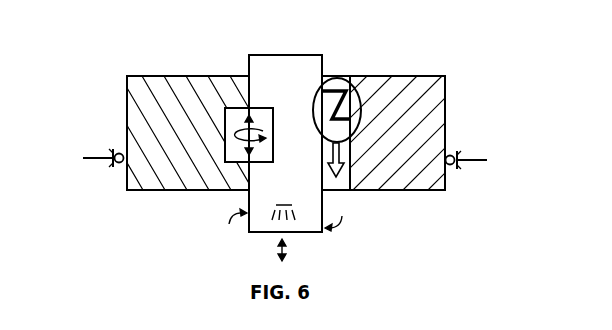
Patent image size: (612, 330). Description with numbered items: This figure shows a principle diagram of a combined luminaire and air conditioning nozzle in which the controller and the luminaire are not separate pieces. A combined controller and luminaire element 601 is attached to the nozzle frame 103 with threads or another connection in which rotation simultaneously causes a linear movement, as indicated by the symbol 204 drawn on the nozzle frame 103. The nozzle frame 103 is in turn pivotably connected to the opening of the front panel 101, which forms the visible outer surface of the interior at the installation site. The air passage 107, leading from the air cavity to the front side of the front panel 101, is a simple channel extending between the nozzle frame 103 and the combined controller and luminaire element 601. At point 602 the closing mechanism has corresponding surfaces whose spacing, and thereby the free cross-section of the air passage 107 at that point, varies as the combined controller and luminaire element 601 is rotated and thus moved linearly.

The front panel 101 is at (487, 160).
The nozzle frame 103 is at (443, 76).
The air passage 107 is at (343, 188).
The symbol for rotation causing linear movement 204 is at (225, 120).
The combined controller and luminaire element 601 is at (247, 232).
The point of the closing mechanism with corresponding surfaces 602 is at (340, 78).